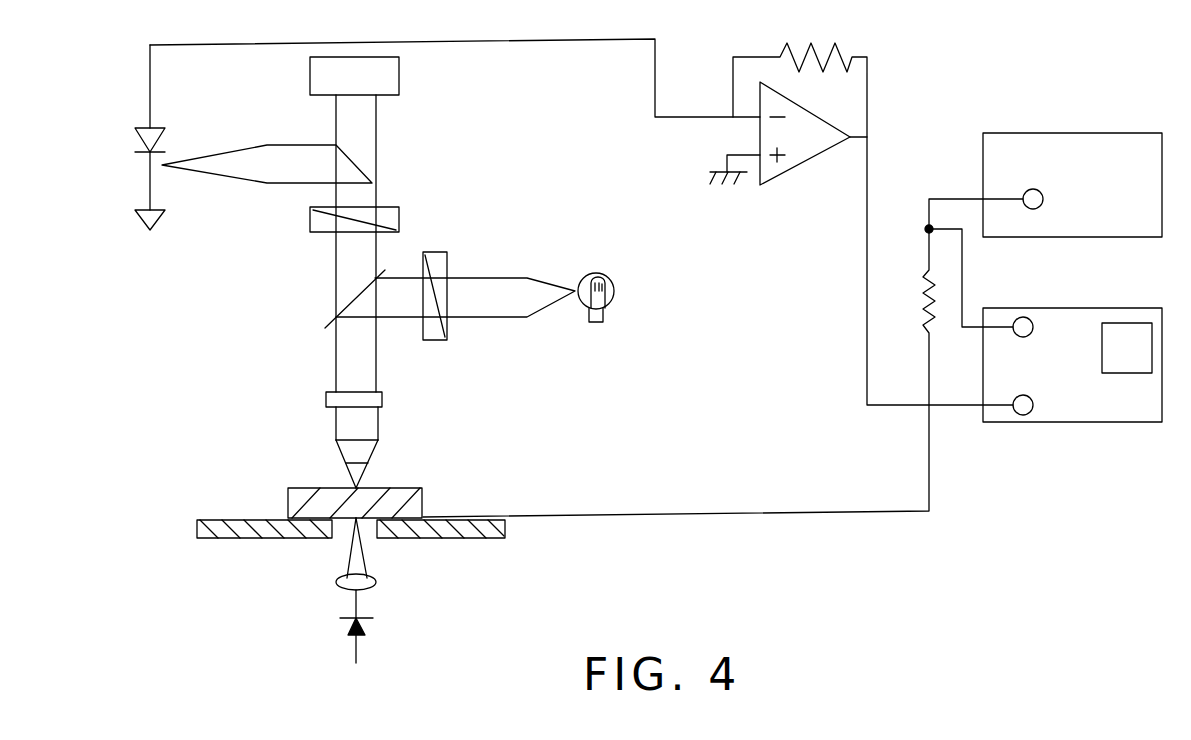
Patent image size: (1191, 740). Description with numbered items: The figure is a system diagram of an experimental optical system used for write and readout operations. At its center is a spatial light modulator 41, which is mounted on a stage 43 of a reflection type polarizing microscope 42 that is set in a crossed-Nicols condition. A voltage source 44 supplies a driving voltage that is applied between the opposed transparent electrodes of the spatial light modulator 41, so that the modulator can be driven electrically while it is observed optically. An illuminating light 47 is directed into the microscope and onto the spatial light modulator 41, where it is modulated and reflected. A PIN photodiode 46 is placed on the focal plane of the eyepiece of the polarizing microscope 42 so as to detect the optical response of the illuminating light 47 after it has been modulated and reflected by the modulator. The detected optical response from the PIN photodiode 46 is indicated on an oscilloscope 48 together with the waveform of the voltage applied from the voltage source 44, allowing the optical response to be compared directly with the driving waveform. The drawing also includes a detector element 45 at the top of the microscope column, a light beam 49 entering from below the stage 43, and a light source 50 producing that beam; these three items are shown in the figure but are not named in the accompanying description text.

The spatial light modulator 41 is at (423, 503).
The reflection type polarizing microscope 42 is at (220, 361).
The stage 43 is at (232, 540).
The voltage source 44 is at (1097, 140).
The photodetector 45 is at (400, 77).
The PIN photodiode 46 is at (135, 137).
The illuminating light 47 is at (503, 275).
The oscilloscope 48 is at (1088, 318).
The laser beam 49 is at (362, 648).
The semiconductor laser 50 is at (377, 617).